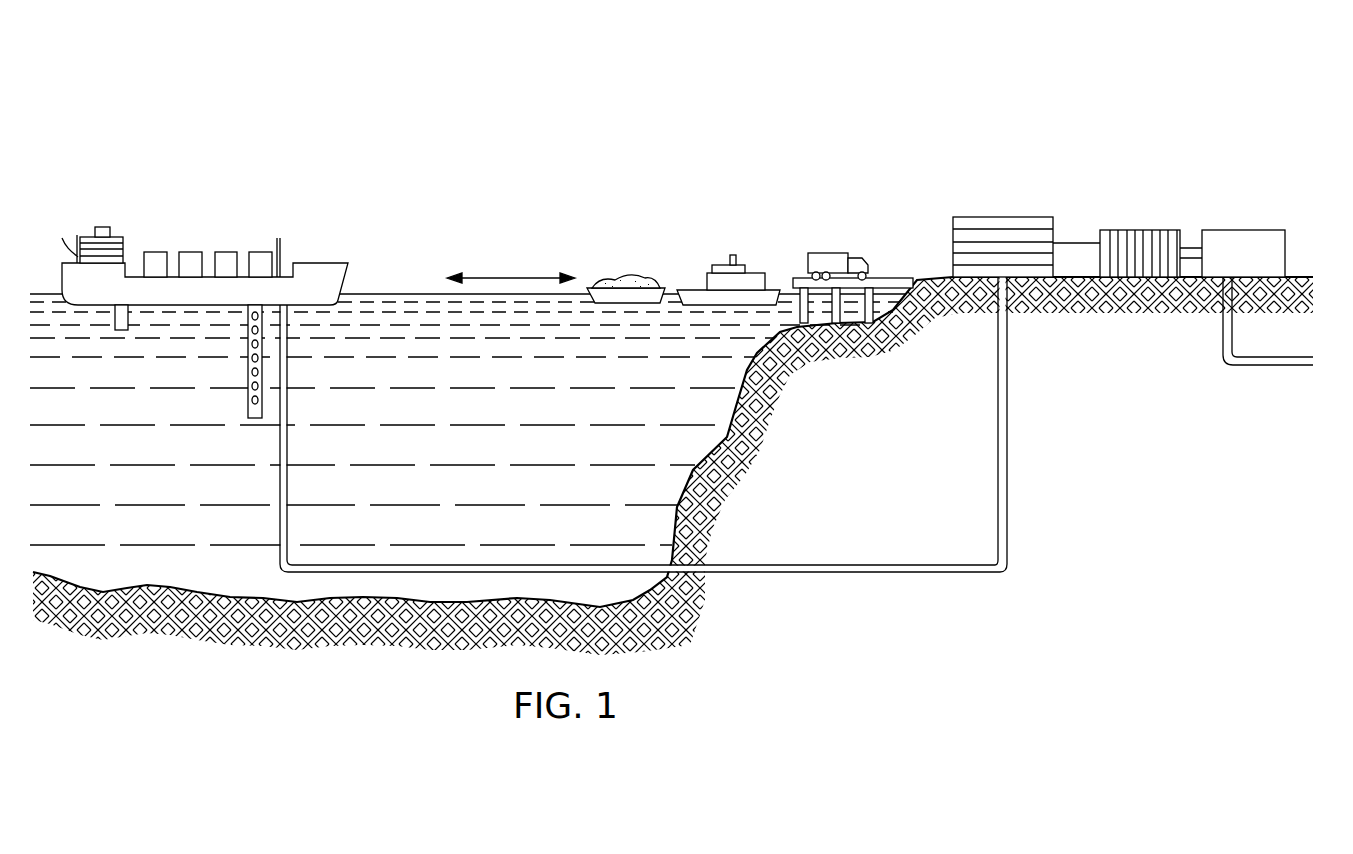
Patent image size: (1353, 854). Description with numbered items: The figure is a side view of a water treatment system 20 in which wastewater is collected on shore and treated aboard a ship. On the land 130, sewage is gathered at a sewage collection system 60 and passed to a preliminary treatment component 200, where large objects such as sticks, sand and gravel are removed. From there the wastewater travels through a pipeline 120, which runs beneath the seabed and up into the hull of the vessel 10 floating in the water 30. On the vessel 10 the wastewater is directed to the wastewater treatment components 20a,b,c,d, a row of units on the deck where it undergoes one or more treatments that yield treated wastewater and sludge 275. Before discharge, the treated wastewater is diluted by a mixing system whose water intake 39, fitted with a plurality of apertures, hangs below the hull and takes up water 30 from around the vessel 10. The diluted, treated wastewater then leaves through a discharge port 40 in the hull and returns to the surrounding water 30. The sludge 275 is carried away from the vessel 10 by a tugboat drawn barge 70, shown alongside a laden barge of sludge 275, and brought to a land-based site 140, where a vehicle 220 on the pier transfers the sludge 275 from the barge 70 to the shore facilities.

The vessel 10 is at (350, 250).
The system 20 is at (952, 112).
The wastewater treatment components 20a,b,c,d is at (277, 220).
The water 30 is at (462, 462).
The water intake 39 is at (250, 418).
The discharge port 40 is at (115, 330).
The sewage collection system 60 is at (1225, 262).
The tugboat drawn barge 70 is at (735, 255).
The pipeline 120 is at (330, 565).
The land 130 is at (1115, 535).
The land-based site 140 is at (1132, 262).
The preliminary treatment component 200 is at (1020, 250).
The vehicle 220 is at (828, 253).
The sludge 275 is at (624, 272).